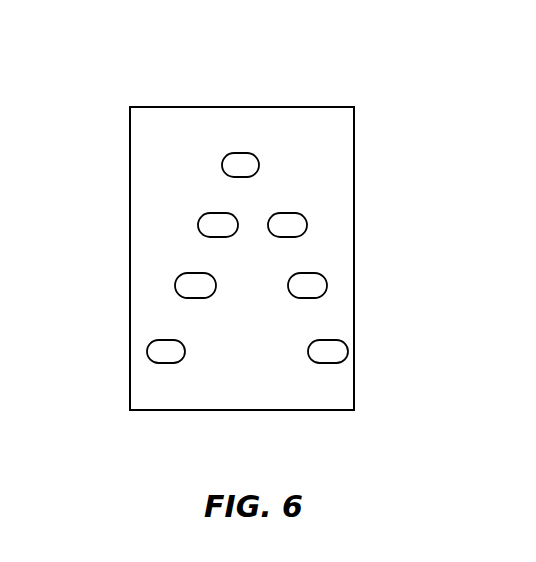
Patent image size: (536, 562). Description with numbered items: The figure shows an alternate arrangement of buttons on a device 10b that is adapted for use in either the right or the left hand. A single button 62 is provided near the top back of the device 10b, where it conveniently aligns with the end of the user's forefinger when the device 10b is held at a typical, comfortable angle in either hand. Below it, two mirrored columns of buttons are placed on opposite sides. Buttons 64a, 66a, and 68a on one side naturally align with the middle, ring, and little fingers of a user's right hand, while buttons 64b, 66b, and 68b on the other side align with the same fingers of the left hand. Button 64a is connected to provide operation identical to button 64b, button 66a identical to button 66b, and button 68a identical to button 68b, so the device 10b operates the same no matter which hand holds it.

The device 10b is at (245, 106).
The button 62 is at (248, 165).
The button 64a is at (294, 226).
The button 64b is at (212, 226).
The button 66a is at (313, 287).
The button 66b is at (206, 287).
The button 68a is at (333, 352).
The button 68b is at (166, 353).